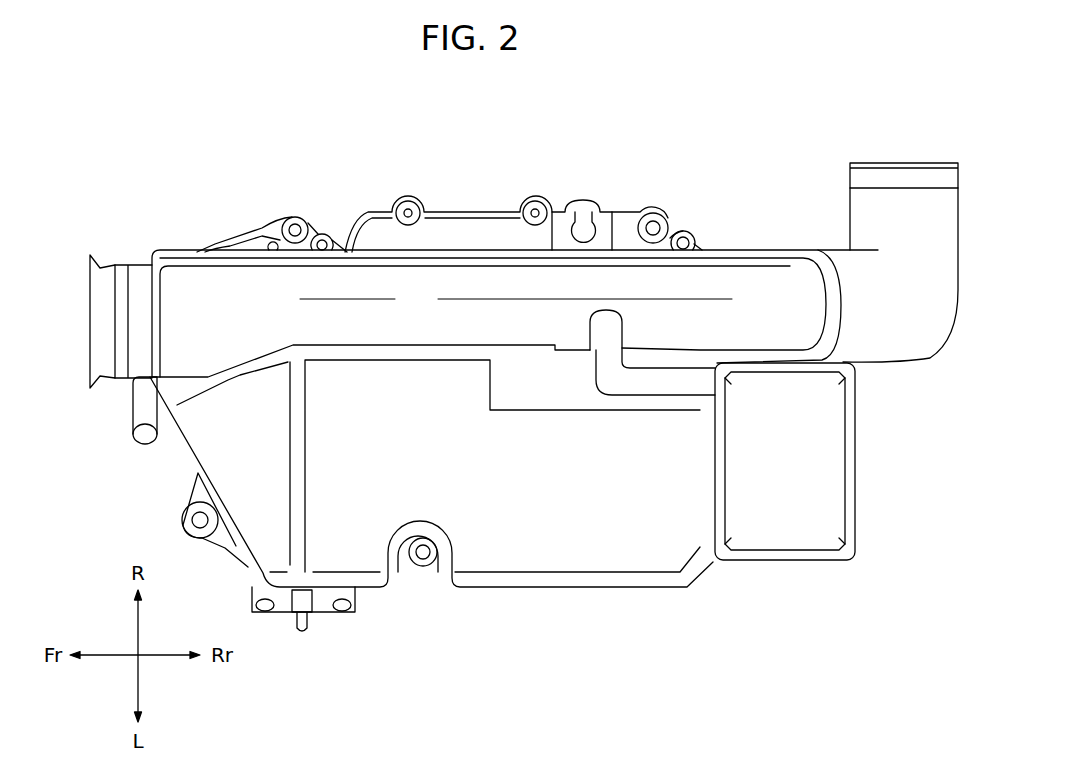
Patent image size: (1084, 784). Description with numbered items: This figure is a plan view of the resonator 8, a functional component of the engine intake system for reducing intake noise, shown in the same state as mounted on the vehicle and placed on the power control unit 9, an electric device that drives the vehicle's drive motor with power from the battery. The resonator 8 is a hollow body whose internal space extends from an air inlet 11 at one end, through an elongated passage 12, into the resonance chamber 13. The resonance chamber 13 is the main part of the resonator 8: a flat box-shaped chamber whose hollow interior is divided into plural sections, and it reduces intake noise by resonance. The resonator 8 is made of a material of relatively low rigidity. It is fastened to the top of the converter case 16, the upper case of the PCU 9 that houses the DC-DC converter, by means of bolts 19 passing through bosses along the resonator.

The resonator 8 is at (506, 603).
The power control unit (PCU) 9 is at (553, 150).
The air inlet 11 is at (88, 282).
The passage 12 is at (228, 292).
The resonance chamber 13 is at (478, 382).
The converter case 16 is at (437, 223).
The bolts 19 is at (295, 216).